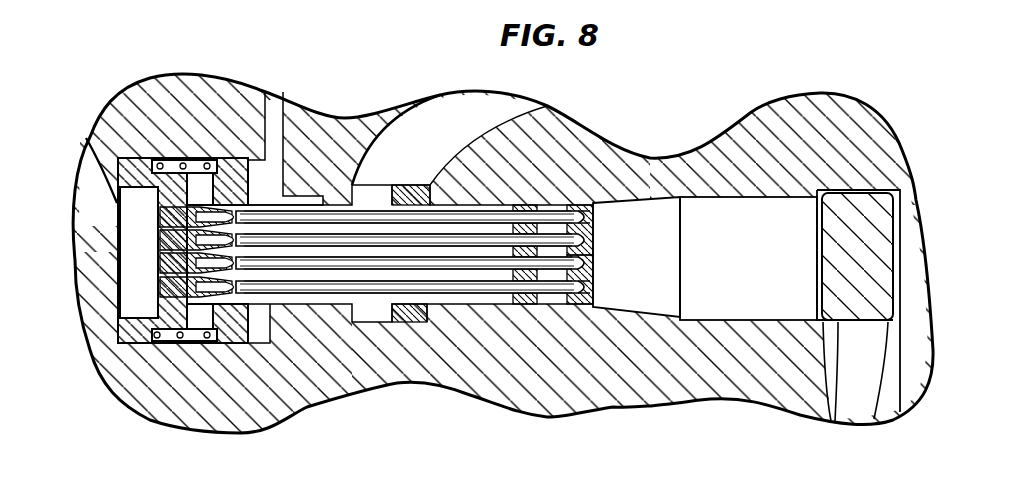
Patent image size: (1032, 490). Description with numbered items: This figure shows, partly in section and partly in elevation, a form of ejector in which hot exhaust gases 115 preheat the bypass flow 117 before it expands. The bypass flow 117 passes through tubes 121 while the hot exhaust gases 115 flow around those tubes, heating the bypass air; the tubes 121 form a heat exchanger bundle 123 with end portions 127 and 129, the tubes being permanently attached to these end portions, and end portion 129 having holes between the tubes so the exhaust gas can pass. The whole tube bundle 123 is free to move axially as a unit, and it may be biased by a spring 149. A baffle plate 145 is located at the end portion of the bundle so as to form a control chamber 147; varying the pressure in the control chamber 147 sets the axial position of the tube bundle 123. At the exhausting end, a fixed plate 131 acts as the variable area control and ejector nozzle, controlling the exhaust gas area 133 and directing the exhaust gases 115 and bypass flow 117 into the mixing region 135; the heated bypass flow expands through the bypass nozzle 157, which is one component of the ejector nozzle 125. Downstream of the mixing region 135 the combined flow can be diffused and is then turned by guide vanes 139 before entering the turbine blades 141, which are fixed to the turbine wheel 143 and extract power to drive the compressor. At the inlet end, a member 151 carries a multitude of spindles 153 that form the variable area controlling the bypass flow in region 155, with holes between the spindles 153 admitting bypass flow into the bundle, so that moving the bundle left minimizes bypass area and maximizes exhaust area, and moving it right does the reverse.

The hot exhaust gases 115 is at (447, 392).
The bypass flow 117 is at (378, 292).
The tubes 121 is at (497, 240).
The heat exchanger bundle 123 is at (501, 306).
The ejector nozzle 125 is at (600, 282).
The end portion 127 is at (233, 330).
The end portion 129 is at (526, 306).
The fixed plate 131 is at (588, 310).
The exhaust gas area 133 is at (588, 203).
The mixing region 135 is at (672, 263).
The guide vanes 139 is at (744, 272).
The turbine blades 141 is at (877, 273).
The turbine wheel 143 is at (857, 398).
The baffle plate 145 is at (247, 308).
The control chamber 147 is at (255, 178).
The spring 149 is at (151, 291).
The member with spindles 151 is at (128, 168).
The spindles 153 is at (165, 246).
The bypass flow control region 155 is at (340, 297).
The bypass nozzle 157 is at (597, 240).